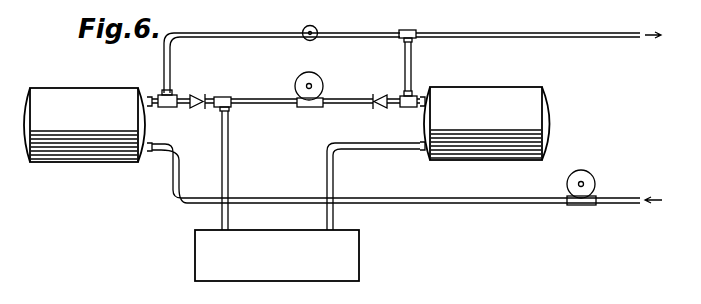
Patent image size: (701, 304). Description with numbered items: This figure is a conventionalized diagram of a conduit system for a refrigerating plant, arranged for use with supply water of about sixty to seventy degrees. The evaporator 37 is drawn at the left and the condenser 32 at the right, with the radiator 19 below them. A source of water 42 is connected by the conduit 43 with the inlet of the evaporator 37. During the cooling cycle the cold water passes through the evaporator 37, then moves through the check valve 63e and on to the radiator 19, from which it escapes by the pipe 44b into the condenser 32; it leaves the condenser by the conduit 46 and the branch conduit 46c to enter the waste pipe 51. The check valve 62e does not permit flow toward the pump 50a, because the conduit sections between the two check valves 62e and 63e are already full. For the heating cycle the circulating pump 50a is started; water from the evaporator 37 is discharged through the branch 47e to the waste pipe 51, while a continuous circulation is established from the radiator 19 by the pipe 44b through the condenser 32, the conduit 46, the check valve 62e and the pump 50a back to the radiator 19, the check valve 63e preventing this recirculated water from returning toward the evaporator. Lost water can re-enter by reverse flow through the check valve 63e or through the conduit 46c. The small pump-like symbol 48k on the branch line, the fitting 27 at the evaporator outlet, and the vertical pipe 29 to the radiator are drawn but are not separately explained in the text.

The evaporator 37 is at (78, 96).
The condenser 32 is at (502, 88).
The branch of pipe 47 47e is at (212, 32).
The waste pipe 51 is at (494, 25).
The pump 48k is at (316, 27).
The tee fitting 27 is at (157, 94).
The check valve 63e is at (196, 95).
The circulating pump 50a is at (303, 73).
The check valve 62e is at (376, 110).
The branch conduit 46c is at (396, 72).
The conduit 46 is at (418, 95).
The conduit 43 is at (452, 204).
The pipe 29 is at (230, 157).
The pipe 44b is at (334, 184).
The source of water 42 is at (585, 172).
The radiator 19 is at (360, 264).